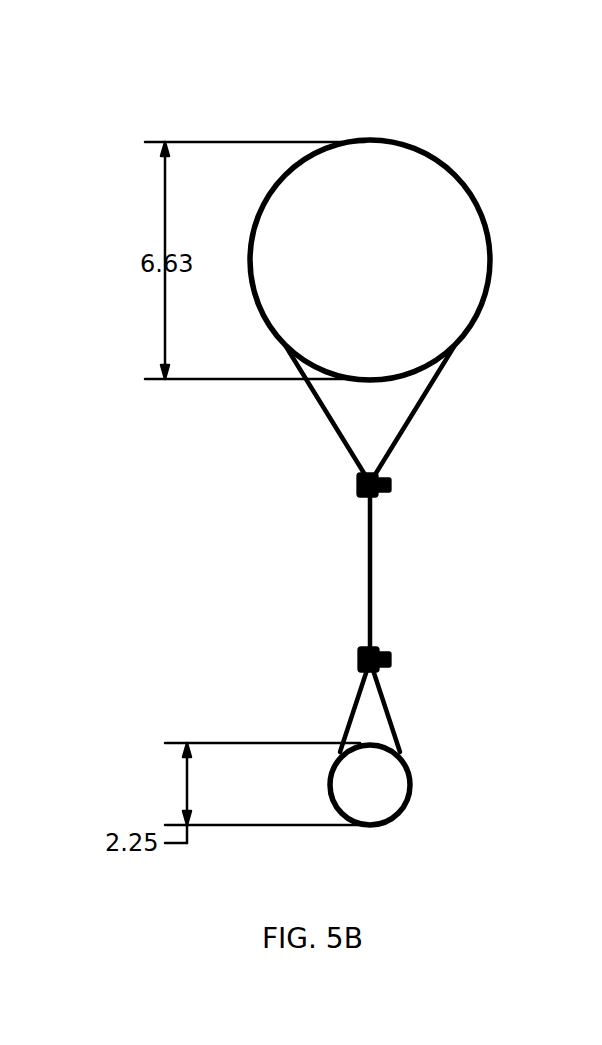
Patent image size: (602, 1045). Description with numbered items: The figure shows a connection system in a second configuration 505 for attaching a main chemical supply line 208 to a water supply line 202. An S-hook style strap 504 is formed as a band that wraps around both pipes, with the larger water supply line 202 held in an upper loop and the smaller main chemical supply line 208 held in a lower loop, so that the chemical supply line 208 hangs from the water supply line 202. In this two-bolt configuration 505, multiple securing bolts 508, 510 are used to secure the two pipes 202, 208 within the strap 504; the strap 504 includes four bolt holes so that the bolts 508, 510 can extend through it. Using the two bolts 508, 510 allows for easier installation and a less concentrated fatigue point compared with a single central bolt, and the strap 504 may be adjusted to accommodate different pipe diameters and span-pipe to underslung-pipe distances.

The second configuration 505 is at (338, 101).
The water supply line 202 is at (428, 247).
The strap 504 is at (408, 418).
The securing bolt 508 is at (356, 487).
The securing bolt 510 is at (356, 658).
The main chemical supply line 208 is at (378, 770).